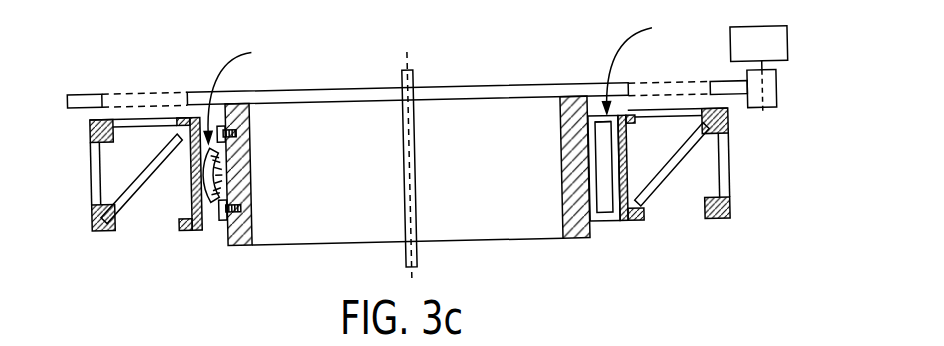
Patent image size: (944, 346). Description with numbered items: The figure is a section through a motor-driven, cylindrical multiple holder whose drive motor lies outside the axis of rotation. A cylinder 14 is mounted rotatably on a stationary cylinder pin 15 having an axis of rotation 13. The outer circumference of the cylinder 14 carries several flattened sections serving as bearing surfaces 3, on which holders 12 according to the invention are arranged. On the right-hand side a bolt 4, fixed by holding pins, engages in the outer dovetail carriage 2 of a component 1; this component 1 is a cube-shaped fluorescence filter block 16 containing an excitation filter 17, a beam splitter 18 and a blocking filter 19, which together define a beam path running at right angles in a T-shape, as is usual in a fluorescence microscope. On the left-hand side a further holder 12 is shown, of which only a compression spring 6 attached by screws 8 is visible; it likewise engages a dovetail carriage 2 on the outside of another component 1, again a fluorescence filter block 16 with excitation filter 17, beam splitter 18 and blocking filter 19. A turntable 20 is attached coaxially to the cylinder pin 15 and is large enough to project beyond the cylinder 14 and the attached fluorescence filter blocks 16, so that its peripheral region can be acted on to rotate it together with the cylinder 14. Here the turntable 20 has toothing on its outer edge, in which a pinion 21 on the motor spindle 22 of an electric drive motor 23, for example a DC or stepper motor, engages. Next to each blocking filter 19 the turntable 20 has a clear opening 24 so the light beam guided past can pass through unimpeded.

The component 1 is at (191, 112).
The dovetail carriage 2 is at (203, 224).
The bearing surfaces 3 is at (599, 119).
The bolt 4 is at (598, 218).
The compression spring 6 is at (214, 198).
The screws 8 is at (240, 205).
The holder 12 is at (440, 78).
The axis of rotation 13 is at (415, 54).
The cylinder 14 is at (573, 236).
The cylinder pin 15 is at (418, 83).
The fluorescence filter block 16 is at (97, 223).
The excitation filter 17 is at (92, 178).
The beam splitter 18 is at (136, 183).
The blocking filter 19 is at (142, 122).
The turntable 20 is at (521, 89).
The pinion 21 is at (774, 82).
The motor spindle 22 is at (766, 119).
The drive motor 23 is at (791, 40).
The clear opening 24 is at (666, 86).